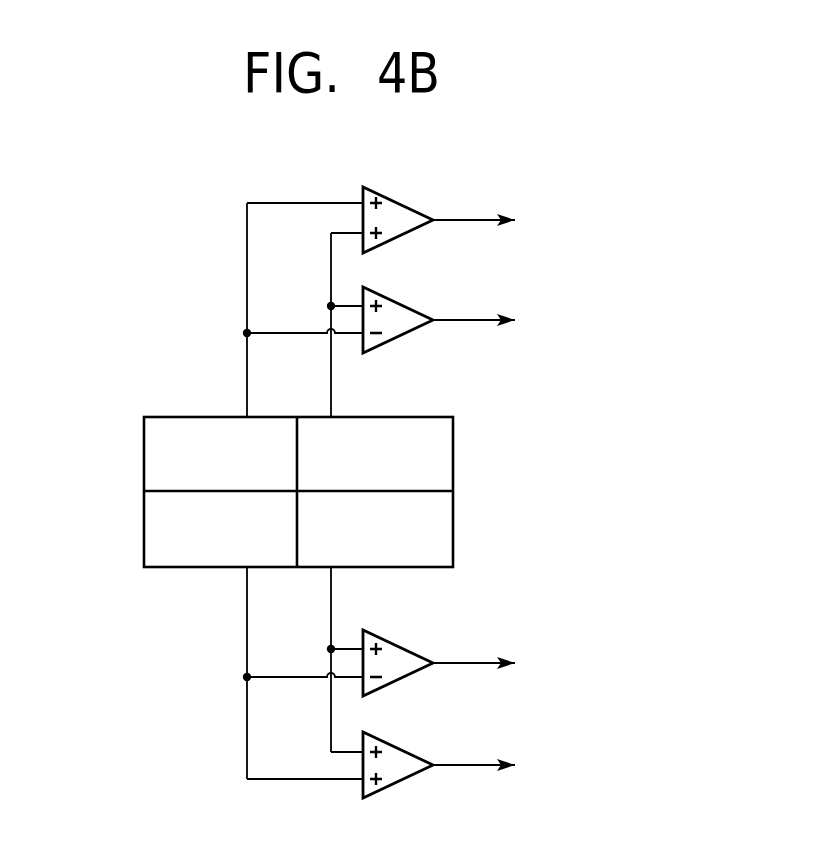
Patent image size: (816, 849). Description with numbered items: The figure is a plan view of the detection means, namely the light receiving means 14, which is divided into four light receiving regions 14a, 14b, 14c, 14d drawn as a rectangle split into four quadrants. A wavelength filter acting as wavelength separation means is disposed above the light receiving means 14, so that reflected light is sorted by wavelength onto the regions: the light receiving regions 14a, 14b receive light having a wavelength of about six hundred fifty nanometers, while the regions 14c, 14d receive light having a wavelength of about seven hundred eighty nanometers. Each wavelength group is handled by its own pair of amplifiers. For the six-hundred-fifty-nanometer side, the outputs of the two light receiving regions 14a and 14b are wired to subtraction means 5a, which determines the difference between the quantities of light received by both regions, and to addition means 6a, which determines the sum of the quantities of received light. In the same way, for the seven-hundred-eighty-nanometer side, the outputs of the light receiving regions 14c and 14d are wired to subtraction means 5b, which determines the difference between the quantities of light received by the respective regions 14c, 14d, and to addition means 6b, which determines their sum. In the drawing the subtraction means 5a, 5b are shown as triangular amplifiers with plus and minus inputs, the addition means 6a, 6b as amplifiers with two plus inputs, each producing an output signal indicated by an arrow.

The light receiving means 14 is at (528, 457).
The light receiving region 14a is at (447, 528).
The light receiving region 14b is at (150, 533).
The light receiving region 14c is at (447, 442).
The light receiving region 14d is at (150, 442).
The subtraction means 5a is at (412, 650).
The subtraction means 5b is at (413, 309).
The addition means 6a is at (412, 752).
The addition means 6b is at (413, 209).